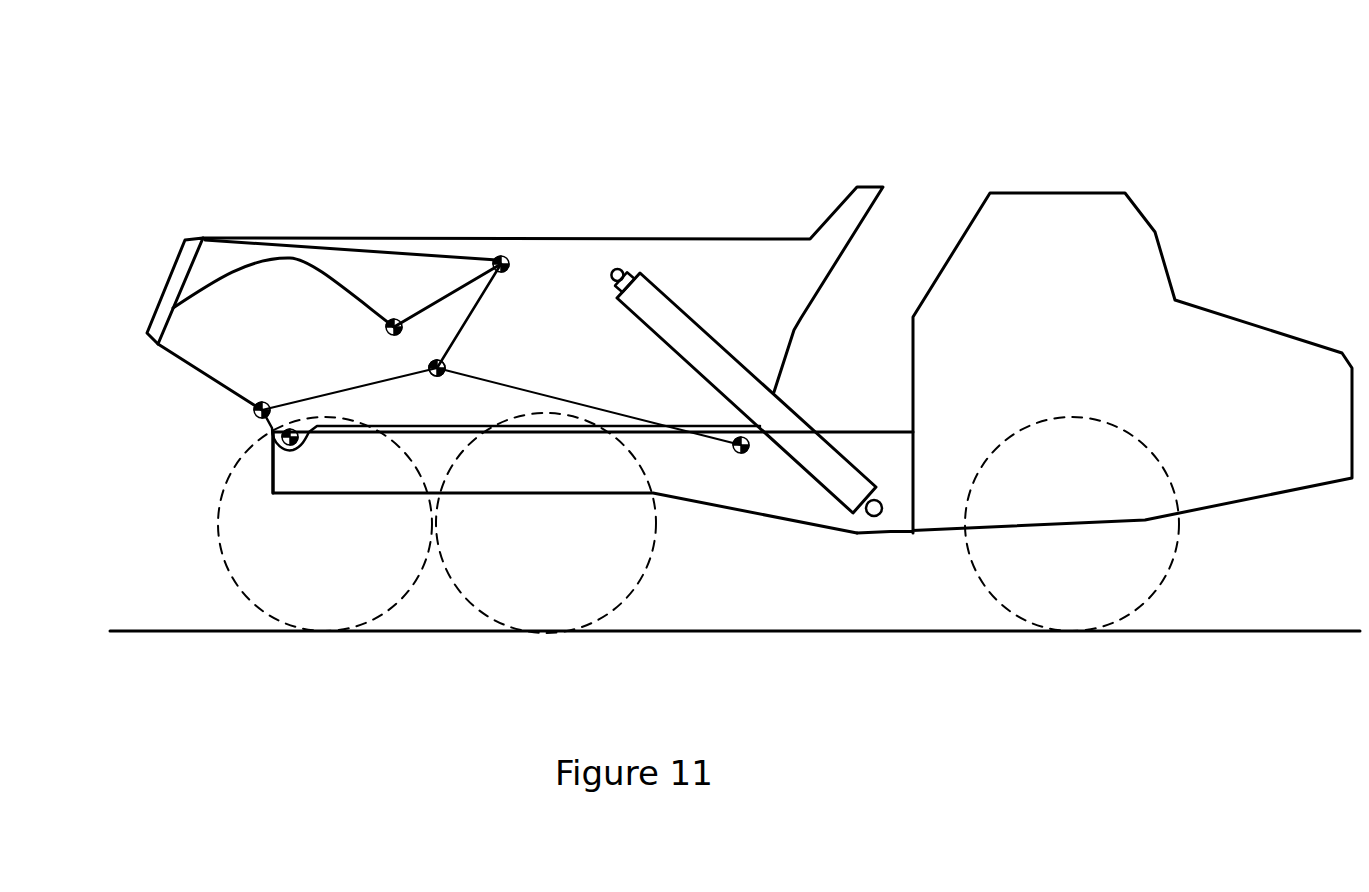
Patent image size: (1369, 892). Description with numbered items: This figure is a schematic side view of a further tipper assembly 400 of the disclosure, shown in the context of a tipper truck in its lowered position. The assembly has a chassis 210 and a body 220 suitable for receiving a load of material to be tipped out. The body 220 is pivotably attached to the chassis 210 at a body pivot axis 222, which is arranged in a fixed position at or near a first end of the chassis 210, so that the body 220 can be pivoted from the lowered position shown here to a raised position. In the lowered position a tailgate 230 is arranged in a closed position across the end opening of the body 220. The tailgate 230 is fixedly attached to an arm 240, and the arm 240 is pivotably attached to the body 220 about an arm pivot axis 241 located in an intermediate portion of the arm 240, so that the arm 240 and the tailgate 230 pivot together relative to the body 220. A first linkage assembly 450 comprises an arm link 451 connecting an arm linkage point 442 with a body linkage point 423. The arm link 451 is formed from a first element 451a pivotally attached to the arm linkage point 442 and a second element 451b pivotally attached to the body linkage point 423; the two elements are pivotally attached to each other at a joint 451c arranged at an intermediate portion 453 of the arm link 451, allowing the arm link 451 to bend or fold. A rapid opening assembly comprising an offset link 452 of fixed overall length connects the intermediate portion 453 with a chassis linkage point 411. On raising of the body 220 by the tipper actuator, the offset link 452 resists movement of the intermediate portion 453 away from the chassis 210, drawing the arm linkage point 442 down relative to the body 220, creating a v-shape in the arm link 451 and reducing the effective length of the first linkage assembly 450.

The tipper assembly 400 is at (243, 162).
The chassis 210 is at (543, 455).
The body 220 is at (707, 272).
The body pivot axis 222 is at (273, 467).
The tailgate 230 is at (145, 333).
The arm 240 is at (346, 263).
The arm pivot axis 241 is at (394, 319).
The chassis linkage point 411 is at (743, 453).
The body linkage point 423 is at (260, 418).
The arm linkage point 442 is at (507, 258).
The first linkage assembly 450 is at (556, 352).
The arm link 451 is at (367, 385).
The first element 451a is at (467, 320).
The second element 451b is at (367, 388).
The joint 451c is at (437, 360).
The offset link 452 is at (622, 418).
The intermediate portion 453 is at (437, 402).